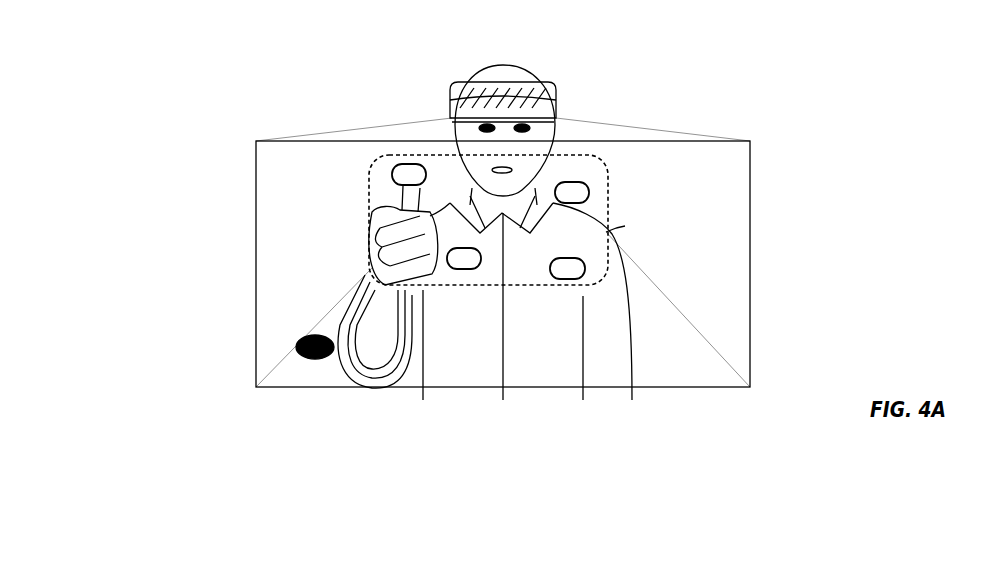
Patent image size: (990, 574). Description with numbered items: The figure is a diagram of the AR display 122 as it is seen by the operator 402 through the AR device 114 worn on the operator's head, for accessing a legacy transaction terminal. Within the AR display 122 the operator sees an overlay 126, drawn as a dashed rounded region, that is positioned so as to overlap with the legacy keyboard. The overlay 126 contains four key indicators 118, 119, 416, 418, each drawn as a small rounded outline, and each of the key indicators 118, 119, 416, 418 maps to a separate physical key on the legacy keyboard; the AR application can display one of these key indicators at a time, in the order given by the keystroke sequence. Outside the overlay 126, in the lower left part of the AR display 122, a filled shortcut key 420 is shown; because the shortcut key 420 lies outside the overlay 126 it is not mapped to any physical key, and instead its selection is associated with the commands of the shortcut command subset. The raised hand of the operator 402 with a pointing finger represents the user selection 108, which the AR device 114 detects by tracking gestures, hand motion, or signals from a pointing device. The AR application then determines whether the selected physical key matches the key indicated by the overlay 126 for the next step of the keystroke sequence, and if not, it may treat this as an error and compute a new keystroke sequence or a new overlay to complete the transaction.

The user selection 108 is at (368, 237).
The AR device 114 is at (553, 110).
The key indicator 118 is at (465, 268).
The key indicator 119 is at (575, 184).
The AR display 122 is at (748, 283).
The overlay 126 is at (608, 240).
The operator 402 is at (527, 72).
The key indicator 416 is at (398, 164).
The key indicator 418 is at (570, 279).
The shortcut key 420 is at (317, 359).